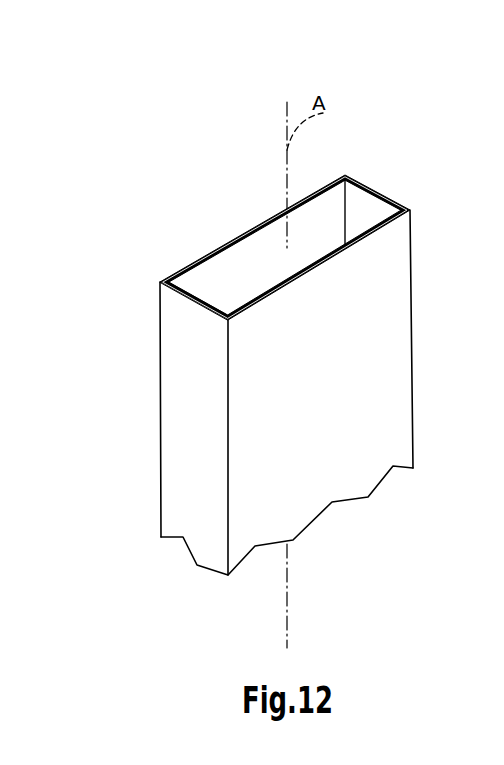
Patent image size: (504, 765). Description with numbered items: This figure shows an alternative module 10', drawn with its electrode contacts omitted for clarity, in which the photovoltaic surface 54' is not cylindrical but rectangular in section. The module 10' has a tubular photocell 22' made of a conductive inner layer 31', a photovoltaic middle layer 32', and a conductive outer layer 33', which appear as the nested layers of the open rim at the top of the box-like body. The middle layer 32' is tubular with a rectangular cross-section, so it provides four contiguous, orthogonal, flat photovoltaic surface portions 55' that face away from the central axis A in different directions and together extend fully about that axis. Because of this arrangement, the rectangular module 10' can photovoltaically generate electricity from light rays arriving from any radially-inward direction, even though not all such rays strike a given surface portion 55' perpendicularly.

The module 10' is at (304, 309).
The tubular photocell 22' is at (436, 339).
The conductive inner layer 31' is at (306, 230).
The photovoltaic middle layer 32' is at (324, 245).
The conductive outer layer 33' is at (420, 212).
The photovoltaic surface 54' is at (358, 447).
The flat photovoltaic surface portions 55' is at (293, 383).